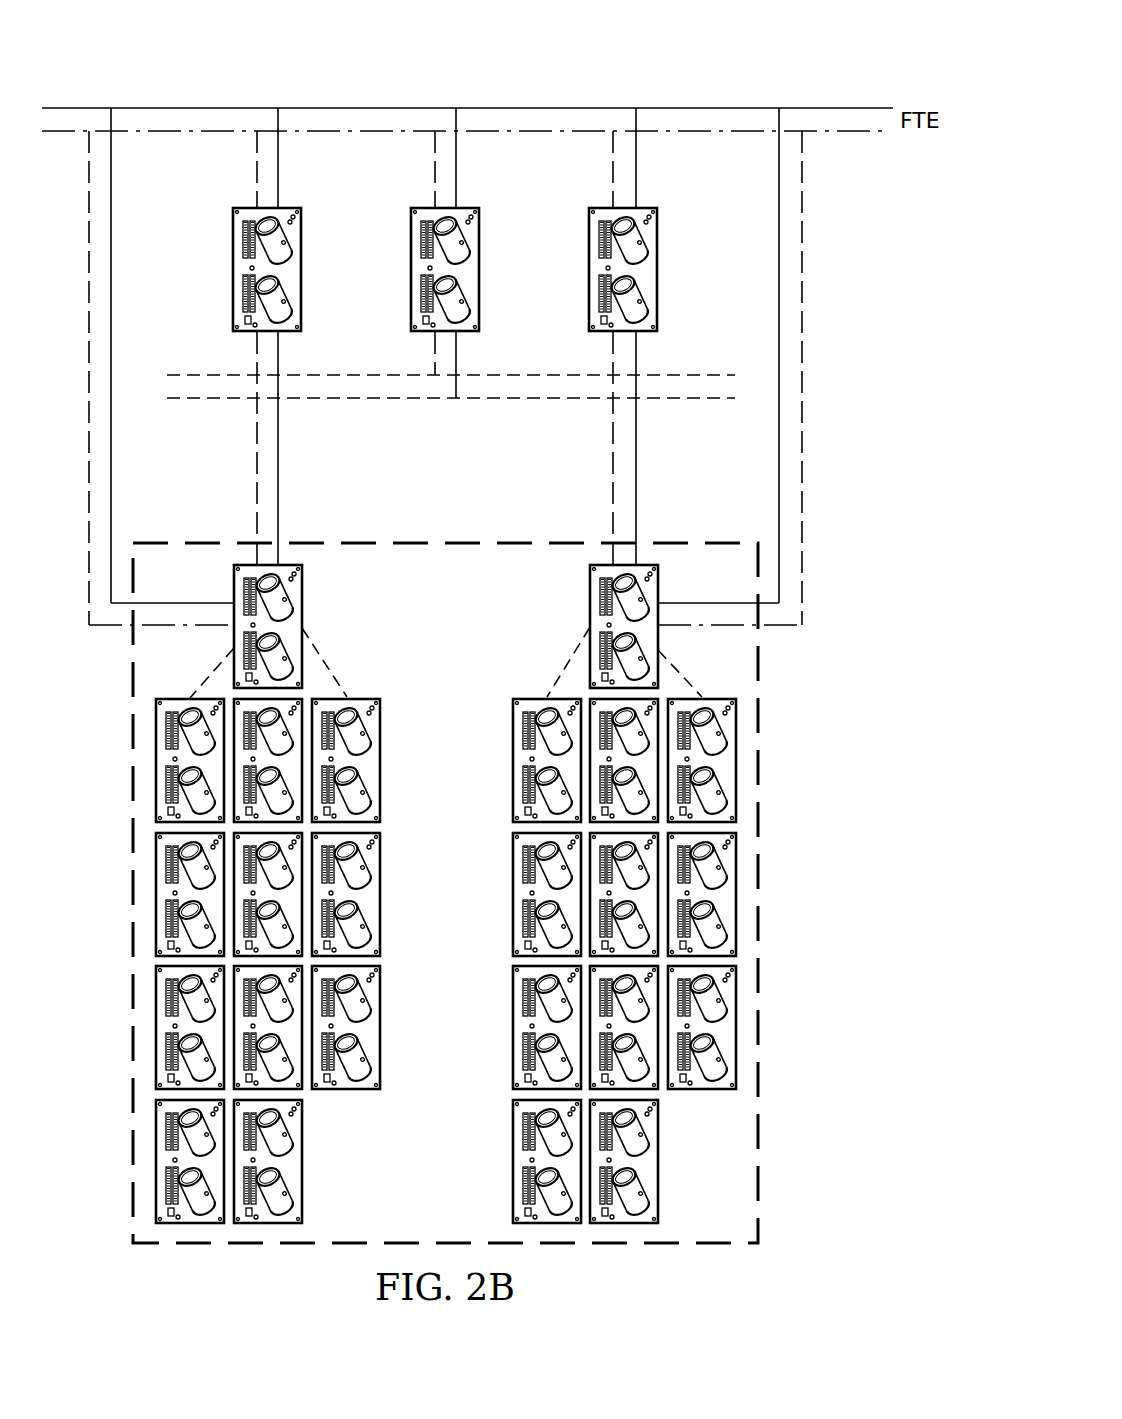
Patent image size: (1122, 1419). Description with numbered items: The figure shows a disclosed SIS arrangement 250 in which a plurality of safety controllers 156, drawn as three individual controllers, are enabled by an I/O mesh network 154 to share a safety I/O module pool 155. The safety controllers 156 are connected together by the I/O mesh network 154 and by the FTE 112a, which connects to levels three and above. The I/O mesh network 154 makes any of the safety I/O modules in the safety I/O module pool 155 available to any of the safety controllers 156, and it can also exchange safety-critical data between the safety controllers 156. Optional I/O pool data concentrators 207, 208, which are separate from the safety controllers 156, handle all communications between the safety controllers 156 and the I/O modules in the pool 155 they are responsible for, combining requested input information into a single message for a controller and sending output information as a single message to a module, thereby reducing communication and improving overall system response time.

The SIS arrangement 250 is at (256, 61).
The FTE 112a is at (857, 108).
The safety controllers 156 is at (824, 264).
The I/O mesh network 154 is at (366, 403).
The I/O pool data concentrator 207 is at (303, 592).
The I/O pool data concentrator 208 is at (589, 592).
The safety I/O module pool 155 is at (530, 893).